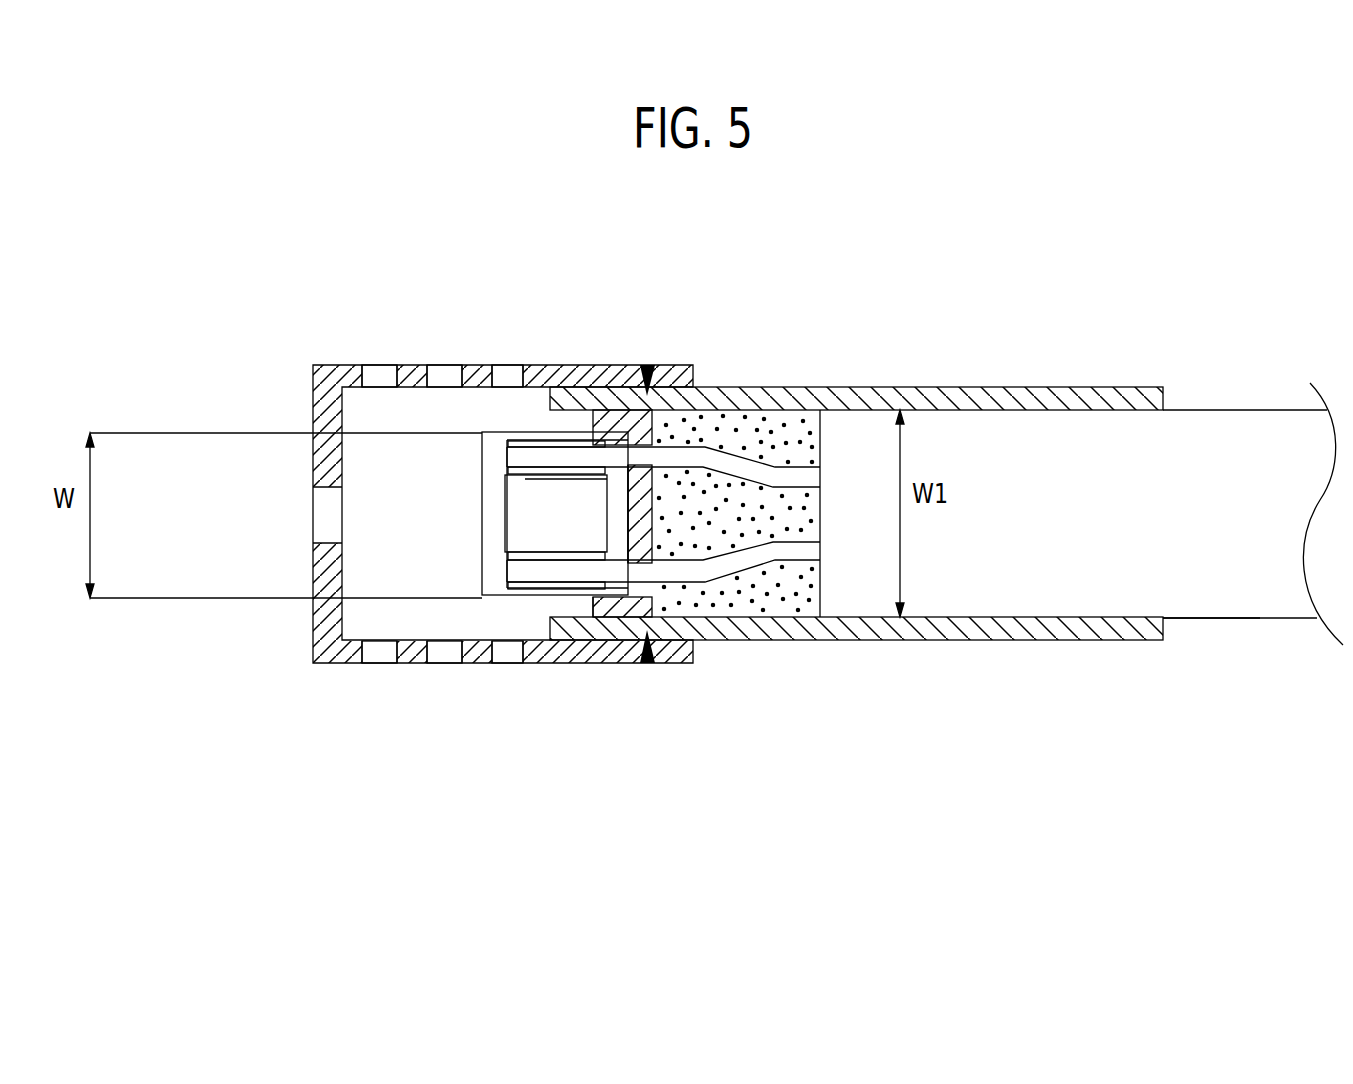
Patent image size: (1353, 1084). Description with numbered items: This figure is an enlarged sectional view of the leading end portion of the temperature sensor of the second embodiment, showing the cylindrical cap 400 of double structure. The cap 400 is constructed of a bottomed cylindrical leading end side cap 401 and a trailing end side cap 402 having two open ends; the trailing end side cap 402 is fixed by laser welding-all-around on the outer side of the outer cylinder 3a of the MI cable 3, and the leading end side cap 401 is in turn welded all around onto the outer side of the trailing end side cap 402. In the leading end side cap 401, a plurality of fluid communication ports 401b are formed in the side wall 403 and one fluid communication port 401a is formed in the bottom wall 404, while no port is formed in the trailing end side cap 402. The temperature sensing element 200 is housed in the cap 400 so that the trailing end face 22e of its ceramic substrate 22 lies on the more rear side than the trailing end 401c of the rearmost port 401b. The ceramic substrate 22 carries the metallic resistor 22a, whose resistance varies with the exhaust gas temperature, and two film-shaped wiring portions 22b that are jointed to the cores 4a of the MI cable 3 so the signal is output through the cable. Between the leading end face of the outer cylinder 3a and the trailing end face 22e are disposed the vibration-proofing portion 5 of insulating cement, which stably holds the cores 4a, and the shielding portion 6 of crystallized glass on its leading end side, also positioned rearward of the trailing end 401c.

The MI cable 3 is at (988, 563).
The outer cylinder 3a is at (1196, 618).
The cores 4a is at (792, 477).
The vibration-proofing portion 5 is at (720, 603).
The shielding portion 6 is at (608, 640).
The ceramic substrate 22 is at (495, 468).
The metallic resistor 22a is at (542, 507).
The wiring portions 22b is at (558, 441).
The trailing end face 22e is at (615, 515).
The temperature sensing element 200 is at (448, 546).
The cap 400 is at (773, 294).
The leading end side cap 401 is at (620, 365).
The fluid communication port 401a is at (328, 545).
The fluid communication ports 401b is at (367, 365).
The trailing end 401c is at (515, 365).
The trailing end side cap 402 is at (752, 387).
The side wall 403 is at (553, 365).
The bottom wall 404 is at (313, 652).